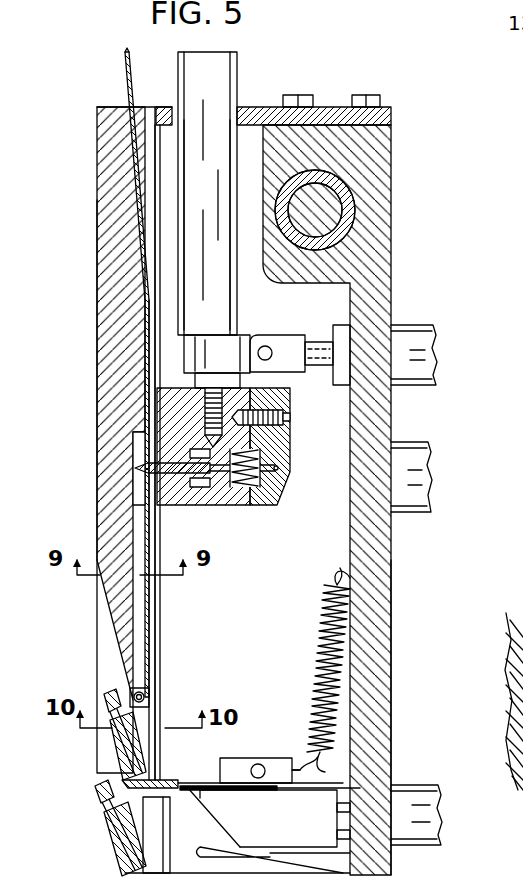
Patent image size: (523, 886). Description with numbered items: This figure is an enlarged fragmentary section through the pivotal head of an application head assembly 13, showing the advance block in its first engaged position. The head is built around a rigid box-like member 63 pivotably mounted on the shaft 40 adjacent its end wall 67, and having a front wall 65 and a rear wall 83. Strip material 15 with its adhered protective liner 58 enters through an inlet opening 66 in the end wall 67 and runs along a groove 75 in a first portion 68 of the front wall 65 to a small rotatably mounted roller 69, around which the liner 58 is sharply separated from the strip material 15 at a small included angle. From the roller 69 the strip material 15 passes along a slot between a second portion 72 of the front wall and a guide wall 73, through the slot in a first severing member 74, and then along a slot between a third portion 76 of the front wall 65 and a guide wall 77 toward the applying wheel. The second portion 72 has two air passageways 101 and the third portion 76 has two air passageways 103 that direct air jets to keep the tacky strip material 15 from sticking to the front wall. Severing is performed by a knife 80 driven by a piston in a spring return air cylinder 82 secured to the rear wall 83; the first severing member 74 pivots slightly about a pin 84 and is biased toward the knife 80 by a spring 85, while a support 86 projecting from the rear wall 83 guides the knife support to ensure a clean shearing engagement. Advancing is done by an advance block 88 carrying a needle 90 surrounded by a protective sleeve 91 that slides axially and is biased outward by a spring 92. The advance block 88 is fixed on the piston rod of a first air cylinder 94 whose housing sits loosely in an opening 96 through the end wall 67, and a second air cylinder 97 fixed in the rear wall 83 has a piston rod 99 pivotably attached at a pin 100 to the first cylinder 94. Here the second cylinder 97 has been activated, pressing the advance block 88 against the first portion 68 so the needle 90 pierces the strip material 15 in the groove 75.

The application head assembly 13 is at (76, 217).
The strip material 15 is at (130, 62).
The shaft 40 is at (332, 210).
The protective liner 58 is at (124, 66).
The box-like member 63 is at (376, 604).
The front wall 65 is at (96, 385).
The inlet opening 66 is at (141, 113).
The end wall 67 is at (331, 107).
The first portion of the front wall 68 is at (105, 300).
The roller 69 is at (150, 697).
The second portion of the front wall 72 is at (118, 740).
The guide wall 73 is at (158, 743).
The first severing member 74 is at (170, 779).
The groove 75 is at (152, 603).
The third portion of the front wall 76 is at (106, 828).
The guide wall 77 is at (166, 843).
The knife 80 is at (193, 790).
The air cylinder 82 is at (436, 812).
The rear wall 83 is at (386, 672).
The pin 84 is at (258, 764).
The spring 85 is at (322, 666).
The support 86 is at (252, 858).
The advance block 88 is at (287, 482).
The needle 90 is at (135, 468).
The protective sleeve 91 is at (165, 506).
The spring 92 is at (243, 488).
The first air cylinder 94 is at (227, 72).
The opening 96 is at (180, 140).
The second air cylinder 97 is at (411, 335).
The piston rod 99 is at (332, 342).
The pin 100 is at (273, 353).
The air passageways 101 is at (124, 758).
The air passageways 103 is at (120, 850).